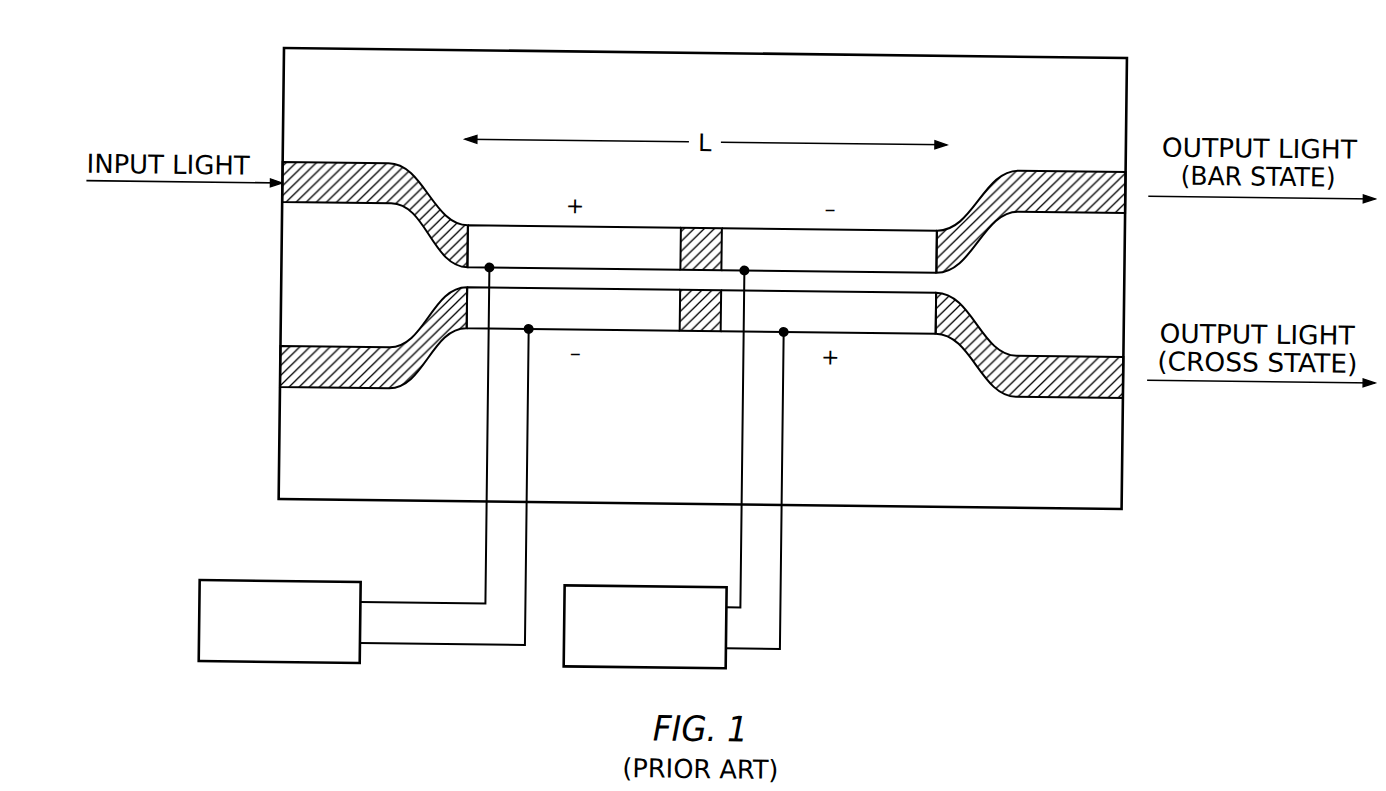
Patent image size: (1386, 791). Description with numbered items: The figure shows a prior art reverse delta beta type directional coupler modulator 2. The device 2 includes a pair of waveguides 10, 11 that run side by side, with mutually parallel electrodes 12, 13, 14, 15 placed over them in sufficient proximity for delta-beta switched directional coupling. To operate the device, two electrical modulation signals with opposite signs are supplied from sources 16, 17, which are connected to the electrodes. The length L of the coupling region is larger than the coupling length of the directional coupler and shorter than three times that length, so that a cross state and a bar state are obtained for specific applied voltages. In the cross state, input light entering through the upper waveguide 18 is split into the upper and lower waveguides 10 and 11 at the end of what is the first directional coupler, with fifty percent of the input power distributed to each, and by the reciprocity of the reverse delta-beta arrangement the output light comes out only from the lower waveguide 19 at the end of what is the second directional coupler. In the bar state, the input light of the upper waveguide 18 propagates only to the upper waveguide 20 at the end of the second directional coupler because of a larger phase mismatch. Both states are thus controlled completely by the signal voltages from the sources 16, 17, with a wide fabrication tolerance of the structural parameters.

The reverse delta beta type directional coupler modulator 2 is at (1062, 594).
The upper waveguide 10 is at (470, 220).
The lower waveguide 11 is at (463, 328).
The electrode 12 is at (654, 222).
The electrode 13 is at (656, 326).
The electrode 14 is at (887, 221).
The electrode 15 is at (886, 326).
The source 16 is at (271, 635).
The source 17 is at (636, 636).
The upper waveguide 18 is at (346, 161).
The lower waveguide 19 is at (1079, 391).
The upper waveguide 20 is at (1081, 162).